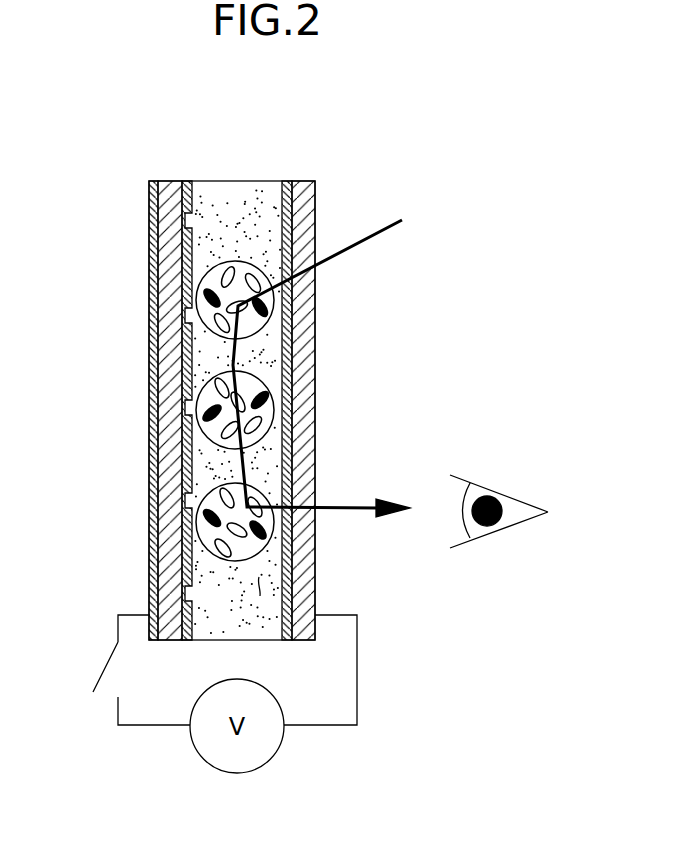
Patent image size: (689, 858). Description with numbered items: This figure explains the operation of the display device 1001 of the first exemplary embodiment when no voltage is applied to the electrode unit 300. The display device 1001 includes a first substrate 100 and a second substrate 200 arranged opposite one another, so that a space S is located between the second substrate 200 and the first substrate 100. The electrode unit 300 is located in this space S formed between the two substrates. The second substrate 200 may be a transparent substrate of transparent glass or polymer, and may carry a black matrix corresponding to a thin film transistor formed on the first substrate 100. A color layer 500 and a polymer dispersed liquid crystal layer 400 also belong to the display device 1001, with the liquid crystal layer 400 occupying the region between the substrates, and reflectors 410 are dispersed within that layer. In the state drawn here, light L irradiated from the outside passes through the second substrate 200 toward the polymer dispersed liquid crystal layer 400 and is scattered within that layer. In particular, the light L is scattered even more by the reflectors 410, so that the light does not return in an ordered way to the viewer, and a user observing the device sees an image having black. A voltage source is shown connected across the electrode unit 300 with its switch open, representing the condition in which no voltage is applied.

The display device 1001 is at (144, 216).
The first substrate 100 is at (170, 416).
The second substrate 200 is at (307, 330).
The electrode unit 300 is at (181, 181).
The polymer dispersed liquid crystal layer 400 is at (262, 190).
The reflector 410 is at (250, 260).
The color layer 500 is at (153, 330).
The light L is at (363, 242).
The space S is at (259, 578).